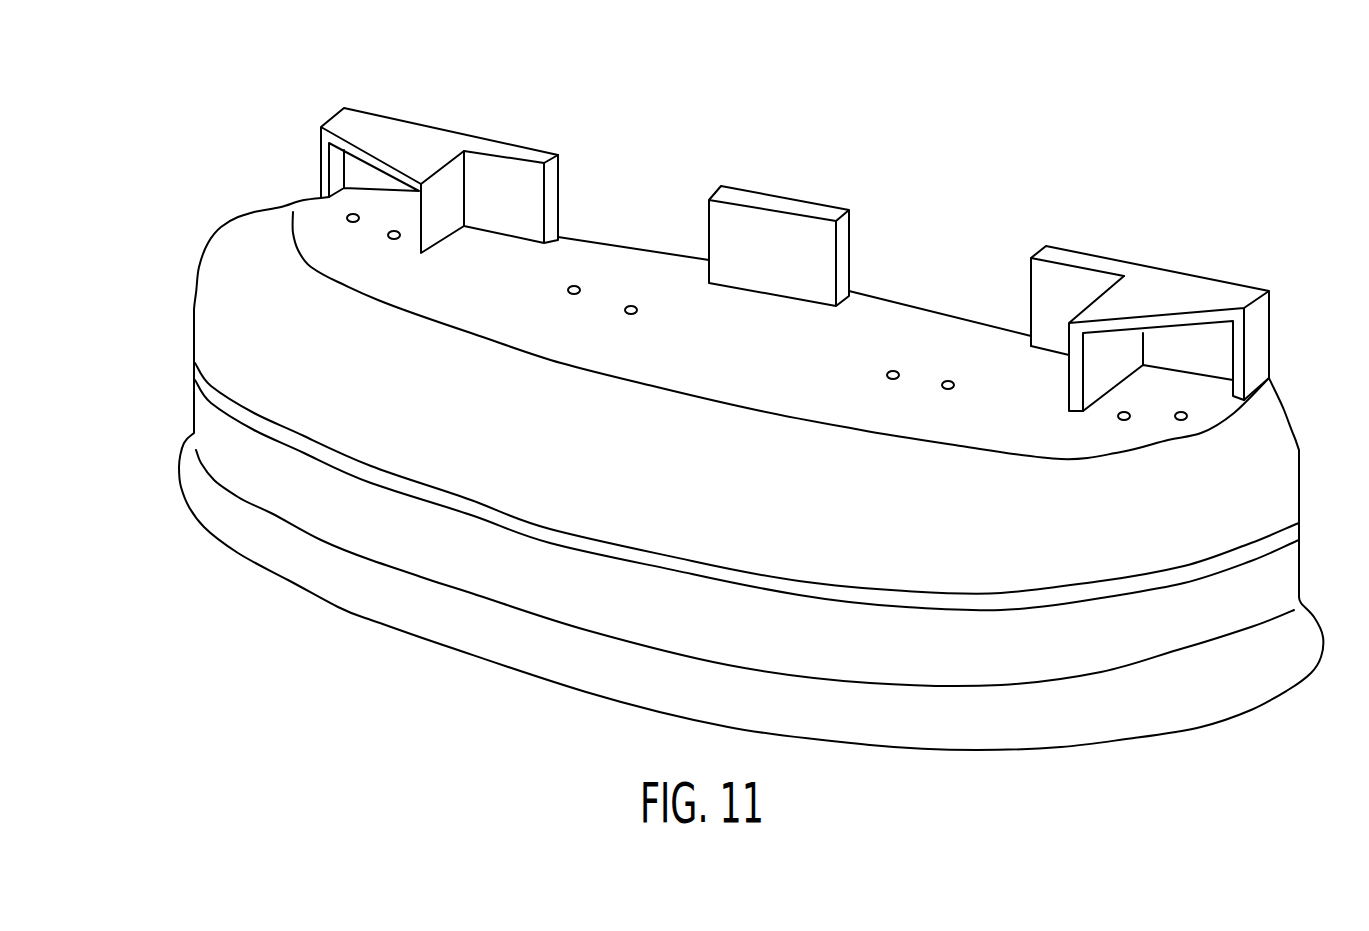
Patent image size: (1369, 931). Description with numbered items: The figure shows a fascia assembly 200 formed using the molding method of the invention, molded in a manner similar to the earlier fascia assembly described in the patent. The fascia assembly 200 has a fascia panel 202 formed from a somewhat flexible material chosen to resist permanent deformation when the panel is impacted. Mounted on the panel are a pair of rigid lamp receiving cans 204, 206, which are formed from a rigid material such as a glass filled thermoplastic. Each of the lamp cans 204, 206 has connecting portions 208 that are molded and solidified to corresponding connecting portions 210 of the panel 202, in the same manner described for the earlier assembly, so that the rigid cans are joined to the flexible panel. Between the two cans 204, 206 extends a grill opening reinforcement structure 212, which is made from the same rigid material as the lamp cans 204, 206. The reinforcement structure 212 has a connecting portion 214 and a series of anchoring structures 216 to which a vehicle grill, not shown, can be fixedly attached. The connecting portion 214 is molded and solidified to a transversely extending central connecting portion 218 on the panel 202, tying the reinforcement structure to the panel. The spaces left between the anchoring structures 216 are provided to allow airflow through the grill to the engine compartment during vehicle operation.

The fascia assembly 200 is at (953, 123).
The fascia panel 202 is at (583, 500).
The lamp receiving can 204 is at (401, 132).
The lamp receiving can 206 is at (1191, 280).
The connecting portions 208 is at (355, 200).
The connecting portions 210 is at (318, 239).
The grill opening reinforcement structure 212 is at (900, 240).
The connecting portion 214 is at (603, 250).
The anchoring structures 216 is at (513, 145).
The central connecting portion 218 is at (750, 358).